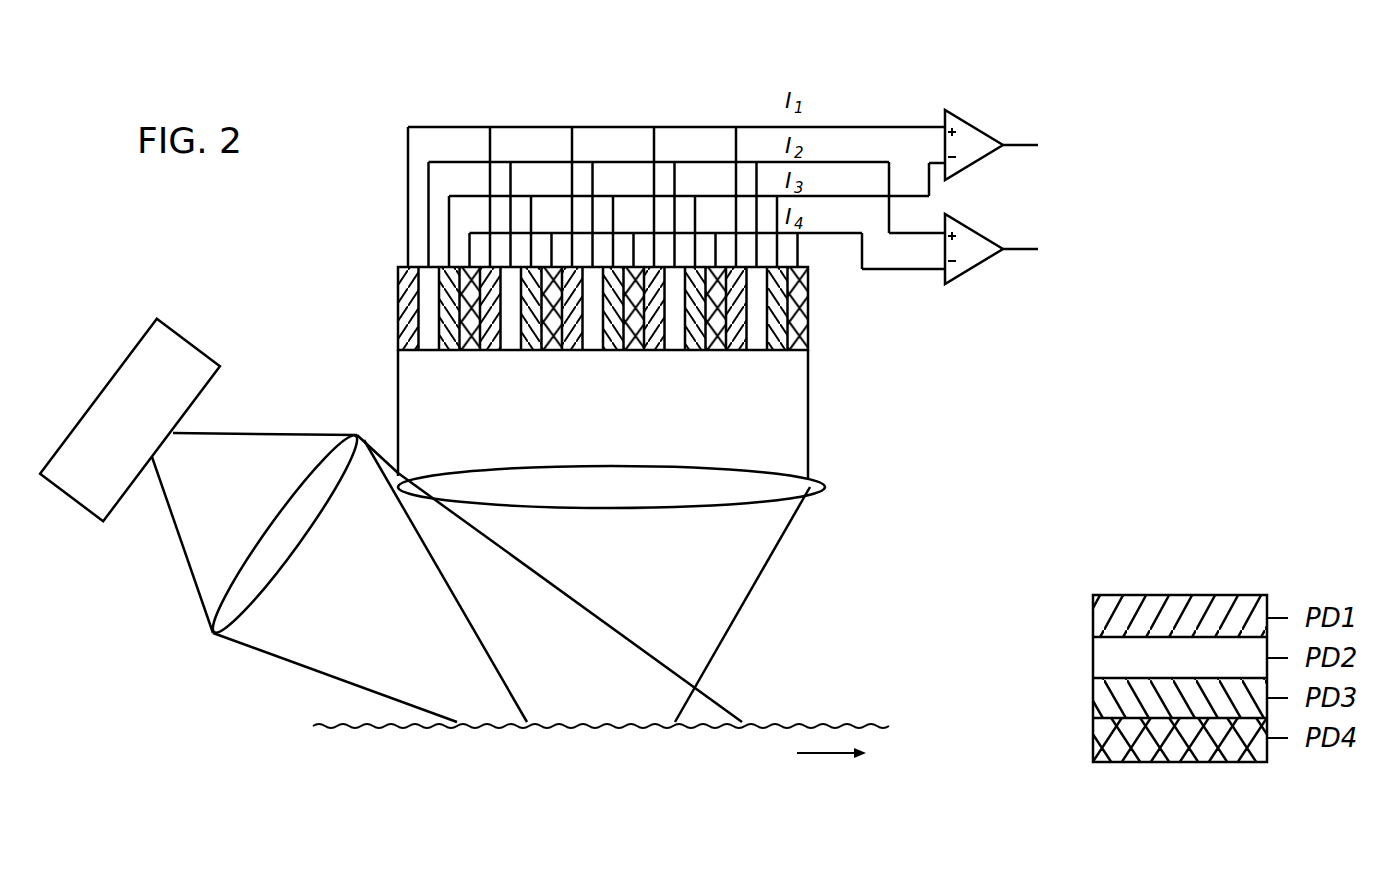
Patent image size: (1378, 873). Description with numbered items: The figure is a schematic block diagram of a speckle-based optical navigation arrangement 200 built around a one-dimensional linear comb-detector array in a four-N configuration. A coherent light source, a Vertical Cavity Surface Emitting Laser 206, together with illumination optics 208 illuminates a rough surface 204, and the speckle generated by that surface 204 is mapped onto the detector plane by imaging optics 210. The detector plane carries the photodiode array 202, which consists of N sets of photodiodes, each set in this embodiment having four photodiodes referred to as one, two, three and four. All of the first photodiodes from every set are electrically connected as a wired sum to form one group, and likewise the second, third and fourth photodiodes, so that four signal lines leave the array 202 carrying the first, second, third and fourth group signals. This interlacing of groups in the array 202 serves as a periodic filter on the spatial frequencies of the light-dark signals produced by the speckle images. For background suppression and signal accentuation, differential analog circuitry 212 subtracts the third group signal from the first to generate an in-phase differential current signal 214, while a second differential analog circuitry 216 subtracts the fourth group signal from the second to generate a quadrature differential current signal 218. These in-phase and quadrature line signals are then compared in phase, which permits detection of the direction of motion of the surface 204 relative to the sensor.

The optical navigation system 200 is at (737, 75).
The photodiode array 202 is at (397, 307).
The surface 204 is at (867, 722).
The Vertical Cavity Surface Emitting Laser (VCSEL) 206 is at (130, 420).
The illumination optics 208 is at (284, 534).
The imaging optics 210 is at (611, 429).
The differential analog circuitry 212 is at (962, 118).
The in-phase differential current signal 214 is at (1115, 145).
The differential analog circuitry 216 is at (970, 273).
The quadrature differential current signal 218 is at (1118, 249).